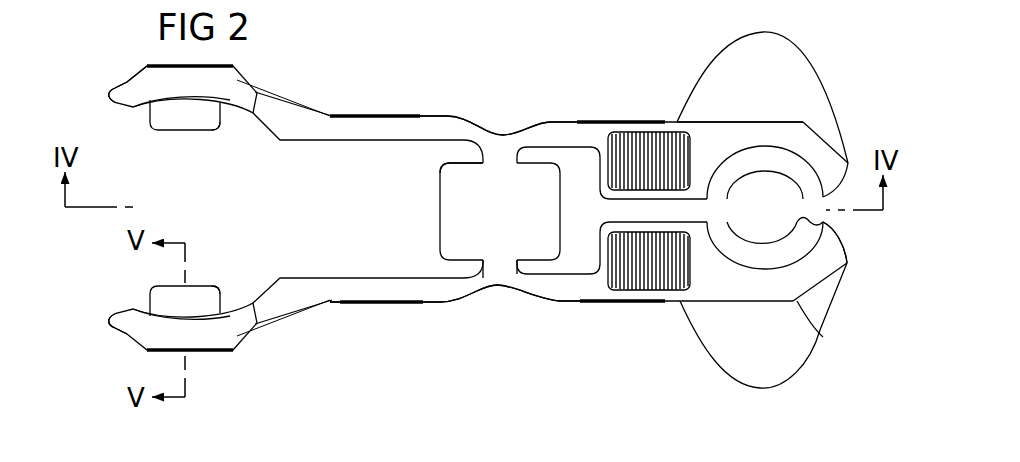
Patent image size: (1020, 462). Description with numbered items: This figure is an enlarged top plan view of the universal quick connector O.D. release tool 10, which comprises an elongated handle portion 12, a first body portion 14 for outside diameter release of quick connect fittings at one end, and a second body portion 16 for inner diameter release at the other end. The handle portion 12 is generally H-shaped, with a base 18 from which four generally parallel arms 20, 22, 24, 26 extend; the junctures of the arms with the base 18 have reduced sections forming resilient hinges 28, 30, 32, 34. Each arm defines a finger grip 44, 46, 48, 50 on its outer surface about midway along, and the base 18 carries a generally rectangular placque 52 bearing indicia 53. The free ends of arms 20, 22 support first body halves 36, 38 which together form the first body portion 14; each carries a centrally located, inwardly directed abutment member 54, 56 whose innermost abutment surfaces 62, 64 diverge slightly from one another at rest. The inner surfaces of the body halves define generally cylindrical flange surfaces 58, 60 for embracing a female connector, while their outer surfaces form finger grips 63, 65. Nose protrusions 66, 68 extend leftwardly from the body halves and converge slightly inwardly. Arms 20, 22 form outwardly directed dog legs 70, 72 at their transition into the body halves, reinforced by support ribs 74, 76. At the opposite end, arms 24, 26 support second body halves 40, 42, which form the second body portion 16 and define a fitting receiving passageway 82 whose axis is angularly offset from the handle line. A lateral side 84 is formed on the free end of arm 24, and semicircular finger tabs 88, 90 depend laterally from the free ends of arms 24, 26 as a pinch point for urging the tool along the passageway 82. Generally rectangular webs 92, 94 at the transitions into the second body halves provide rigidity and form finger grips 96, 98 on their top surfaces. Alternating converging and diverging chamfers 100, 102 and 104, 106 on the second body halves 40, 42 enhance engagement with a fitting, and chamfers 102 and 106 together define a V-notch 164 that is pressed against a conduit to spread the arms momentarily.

The universal quick connector O.D. release tool 10 is at (550, 62).
The elongated handle portion 12 is at (441, 95).
The first body portion 14 is at (272, 60).
The second body portion 16 is at (840, 84).
The base 18 is at (493, 284).
The arm 20 is at (362, 291).
The arm 22 is at (353, 133).
The arm 24 is at (577, 294).
The arm 26 is at (567, 136).
The resilient hinge 28 is at (470, 291).
The resilient hinge 30 is at (477, 133).
The resilient hinge 32 is at (530, 291).
The resilient hinge 34 is at (527, 132).
The first body half 36 is at (140, 337).
The first body half 38 is at (133, 88).
The second body half 40 is at (815, 275).
The second body half 42 is at (823, 152).
The finger grip 44 is at (398, 307).
The finger grip 46 is at (388, 113).
The finger grip 48 is at (620, 308).
The finger grip 50 is at (610, 120).
The placque 52 is at (440, 240).
The indicia 53 is at (450, 173).
The abutment member 54 is at (160, 297).
The abutment member 56 is at (177, 123).
The flange surface 58 is at (143, 318).
The flange surface 60 is at (143, 108).
The abutment surface 62 is at (200, 287).
The finger grip 63 is at (203, 353).
The abutment surface 64 is at (192, 132).
The finger grip 65 is at (160, 64).
The nose protrusion 66 is at (112, 325).
The nose protrusion 68 is at (113, 97).
The dog leg 70 is at (277, 292).
The dog leg 72 is at (277, 134).
The support rib 74 is at (277, 318).
The support rib 76 is at (292, 107).
The fitting receiving passageway 82 is at (769, 224).
The lateral side 84 is at (822, 337).
The finger tab 88 is at (773, 373).
The finger tab 90 is at (747, 50).
The web 92 is at (608, 222).
The web 94 is at (607, 197).
The finger grip 96 is at (667, 284).
The finger grip 98 is at (658, 152).
The chamfer 100 is at (765, 245).
The chamfer 102 is at (843, 243).
The chamfer 104 is at (810, 198).
The chamfer 106 is at (847, 177).
The V-notch 164 is at (817, 213).